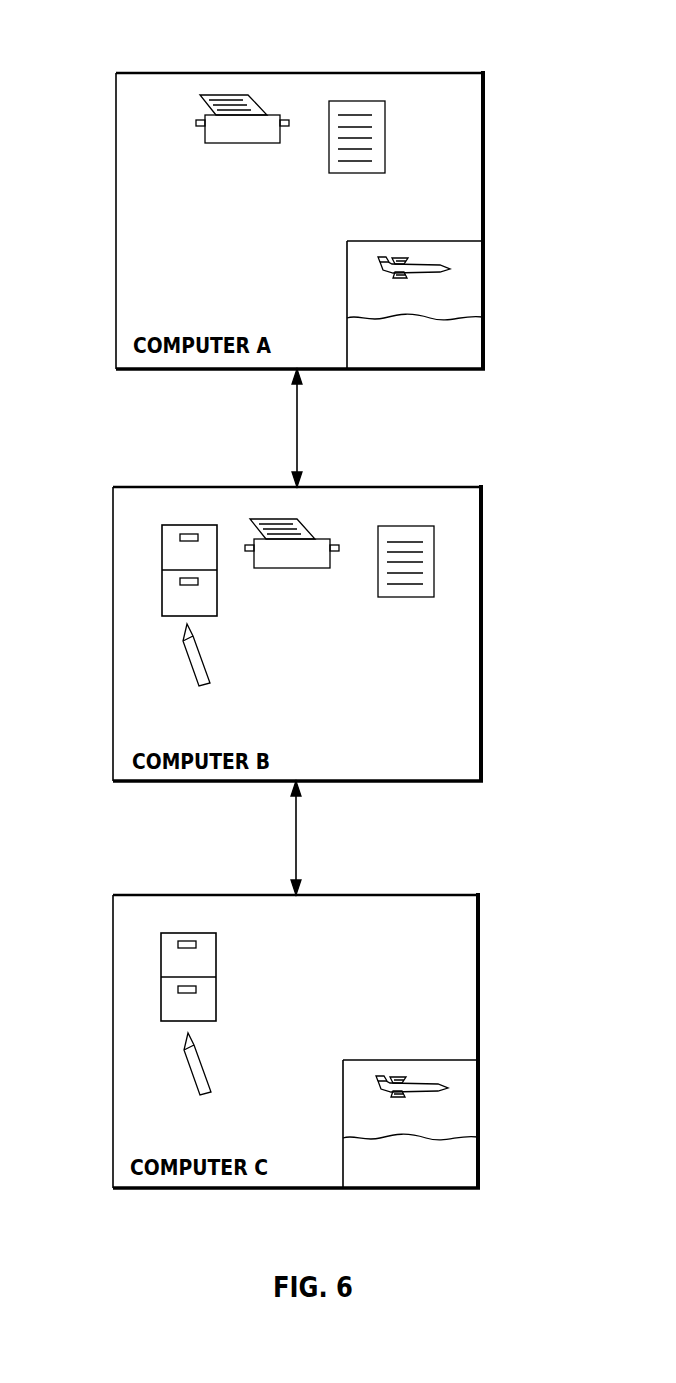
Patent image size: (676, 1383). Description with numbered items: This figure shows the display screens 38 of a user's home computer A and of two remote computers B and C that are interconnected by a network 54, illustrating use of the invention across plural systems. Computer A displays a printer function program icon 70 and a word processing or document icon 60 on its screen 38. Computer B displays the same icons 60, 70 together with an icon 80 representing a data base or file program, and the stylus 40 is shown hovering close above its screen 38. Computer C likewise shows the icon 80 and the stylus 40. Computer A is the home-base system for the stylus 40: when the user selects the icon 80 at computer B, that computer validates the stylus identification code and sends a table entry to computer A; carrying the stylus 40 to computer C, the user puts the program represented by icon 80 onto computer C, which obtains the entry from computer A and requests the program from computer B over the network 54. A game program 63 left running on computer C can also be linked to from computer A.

The display screen 38 is at (483, 126).
The game program 63 is at (456, 284).
The printer function program icon 70 is at (241, 86).
The word processing program icon 60 is at (360, 99).
The data base or file program icon 80 is at (178, 521).
The stylus 40 is at (183, 654).
The network 54 is at (295, 430).